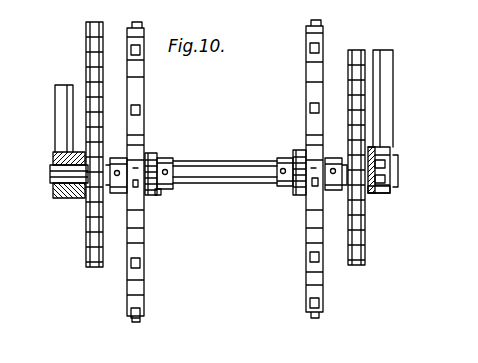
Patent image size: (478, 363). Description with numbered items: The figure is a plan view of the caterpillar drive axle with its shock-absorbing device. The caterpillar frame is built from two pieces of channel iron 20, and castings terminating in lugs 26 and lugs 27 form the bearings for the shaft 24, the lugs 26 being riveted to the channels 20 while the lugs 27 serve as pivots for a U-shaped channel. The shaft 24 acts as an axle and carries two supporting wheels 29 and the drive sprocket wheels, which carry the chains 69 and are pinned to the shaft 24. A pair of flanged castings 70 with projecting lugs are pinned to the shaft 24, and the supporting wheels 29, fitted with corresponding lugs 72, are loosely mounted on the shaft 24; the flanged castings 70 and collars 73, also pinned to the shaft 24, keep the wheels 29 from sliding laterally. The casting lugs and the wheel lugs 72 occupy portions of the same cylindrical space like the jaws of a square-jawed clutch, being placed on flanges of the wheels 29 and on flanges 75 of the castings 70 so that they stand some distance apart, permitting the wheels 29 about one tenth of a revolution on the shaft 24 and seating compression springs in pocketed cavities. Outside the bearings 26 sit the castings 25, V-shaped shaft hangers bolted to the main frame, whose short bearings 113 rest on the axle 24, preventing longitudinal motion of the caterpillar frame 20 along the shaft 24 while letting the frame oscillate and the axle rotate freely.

The channel iron 20 is at (384, 196).
The shaft 24 is at (228, 185).
The castings 25 is at (58, 112).
The lugs 26 is at (78, 199).
The lugs 27 is at (384, 165).
The supporting wheels 29 is at (145, 90).
The chains 69 is at (84, 46).
The flanged castings 70 is at (168, 160).
The lugs 72 is at (150, 153).
The collars 73 is at (115, 193).
The flanges 75 is at (162, 193).
The short bearings 113 is at (57, 196).